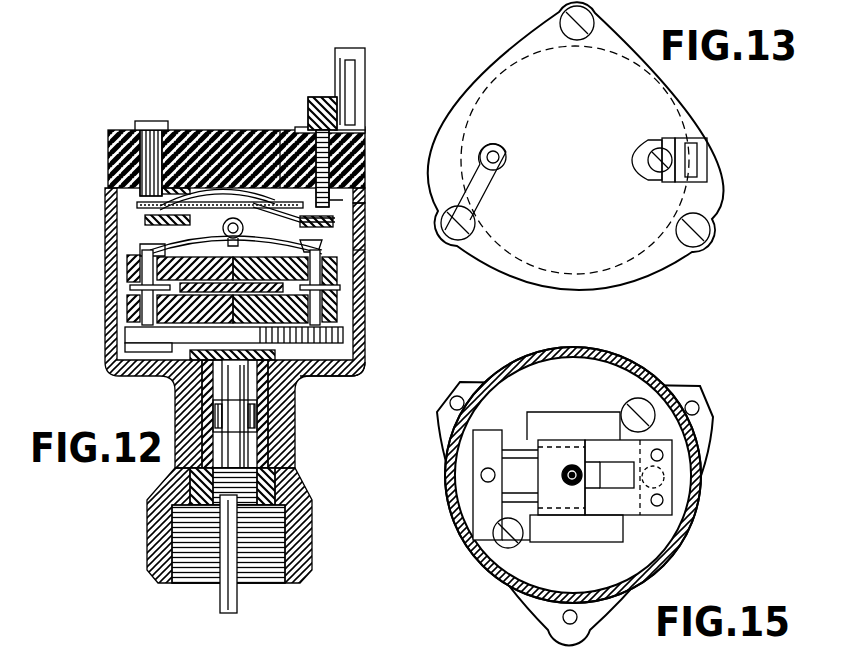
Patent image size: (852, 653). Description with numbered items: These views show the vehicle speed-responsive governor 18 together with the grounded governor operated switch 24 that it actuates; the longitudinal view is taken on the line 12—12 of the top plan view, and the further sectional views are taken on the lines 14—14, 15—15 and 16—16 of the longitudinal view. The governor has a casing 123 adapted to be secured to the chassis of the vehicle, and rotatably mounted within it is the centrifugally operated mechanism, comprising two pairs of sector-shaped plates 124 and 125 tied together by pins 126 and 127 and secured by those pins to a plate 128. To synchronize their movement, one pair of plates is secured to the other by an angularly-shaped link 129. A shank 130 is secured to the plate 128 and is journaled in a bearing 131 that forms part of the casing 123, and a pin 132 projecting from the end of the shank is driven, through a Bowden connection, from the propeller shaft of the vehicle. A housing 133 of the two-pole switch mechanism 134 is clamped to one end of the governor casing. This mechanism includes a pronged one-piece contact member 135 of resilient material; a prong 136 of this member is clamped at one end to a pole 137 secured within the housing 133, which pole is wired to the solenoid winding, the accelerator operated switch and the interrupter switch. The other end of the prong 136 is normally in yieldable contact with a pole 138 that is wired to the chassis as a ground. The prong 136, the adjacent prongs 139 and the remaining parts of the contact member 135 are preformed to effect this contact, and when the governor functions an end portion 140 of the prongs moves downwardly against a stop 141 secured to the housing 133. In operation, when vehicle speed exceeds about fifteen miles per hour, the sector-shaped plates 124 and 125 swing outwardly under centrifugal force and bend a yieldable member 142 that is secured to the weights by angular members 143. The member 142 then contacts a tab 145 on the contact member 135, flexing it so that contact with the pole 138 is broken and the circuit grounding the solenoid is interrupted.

In FIG. 12, the line 12— 12 is at (437, 157).
In FIG. 13, the line 12— 12 is at (733, 178).
In FIG. 12, the line 14— 14 is at (48, 213).
In FIG. 12, the line 15— 15 is at (80, 257).
In FIG. 12, the line 16— 16 is at (92, 282).
In FIG. 12, the vehicle speed-responsive governor 18 is at (285, 455).
In FIG. 12, the grounded governor operated switch 24 is at (357, 223).
In FIG. 12, the casing 123 is at (110, 363).
In FIG. 15, the casing 123 is at (695, 500).
In FIG. 12, the sector-shaped plates 124 is at (128, 312).
In FIG. 12, the sector-shaped plates 125 is at (338, 315).
In FIG. 12, the pin 126 is at (128, 343).
In FIG. 12, the pin 127 is at (352, 366).
In FIG. 12, the plate 128 is at (182, 337).
In FIG. 12, the angularly-shaped link 129 is at (262, 377).
In FIG. 12, the shank 130 is at (247, 448).
In FIG. 12, the bearing 131 is at (262, 412).
In FIG. 12, the pin 132 is at (237, 600).
In FIG. 12, the housing 133 is at (218, 137).
In FIG. 12, the two-pole switch mechanism 134 is at (165, 214).
In FIG. 15, the two-pole switch mechanism 134 is at (600, 520).
In FIG. 12, the pronged one-piece contact member 135 is at (293, 122).
In FIG. 15, the pronged one-piece contact member 135 is at (627, 453).
In FIG. 12, the prong 136 is at (343, 198).
In FIG. 15, the prong 136 is at (670, 460).
In FIG. 12, the pole 137 is at (350, 130).
In FIG. 12, the pole 138 is at (168, 128).
In FIG. 12, the prongs 139 is at (207, 128).
In FIG. 15, the prongs 139 is at (513, 503).
In FIG. 12, the end portion 140 is at (106, 183).
In FIG. 12, the stop 141 is at (107, 212).
In FIG. 15, the stop 141 is at (482, 494).
In FIG. 12, the yieldable member 142 is at (125, 268).
In FIG. 12, the members 143 is at (363, 254).
In FIG. 12, the tab 145 is at (245, 230).
In FIG. 15, the tab 145 is at (563, 478).